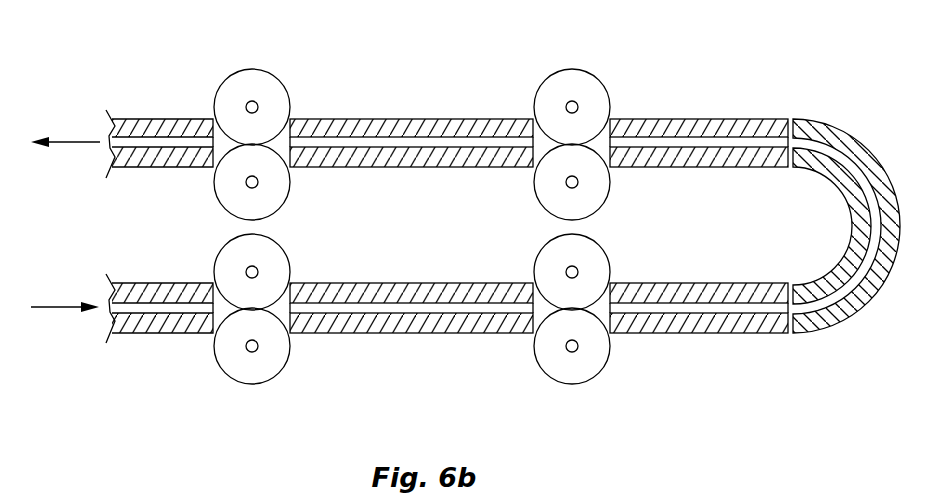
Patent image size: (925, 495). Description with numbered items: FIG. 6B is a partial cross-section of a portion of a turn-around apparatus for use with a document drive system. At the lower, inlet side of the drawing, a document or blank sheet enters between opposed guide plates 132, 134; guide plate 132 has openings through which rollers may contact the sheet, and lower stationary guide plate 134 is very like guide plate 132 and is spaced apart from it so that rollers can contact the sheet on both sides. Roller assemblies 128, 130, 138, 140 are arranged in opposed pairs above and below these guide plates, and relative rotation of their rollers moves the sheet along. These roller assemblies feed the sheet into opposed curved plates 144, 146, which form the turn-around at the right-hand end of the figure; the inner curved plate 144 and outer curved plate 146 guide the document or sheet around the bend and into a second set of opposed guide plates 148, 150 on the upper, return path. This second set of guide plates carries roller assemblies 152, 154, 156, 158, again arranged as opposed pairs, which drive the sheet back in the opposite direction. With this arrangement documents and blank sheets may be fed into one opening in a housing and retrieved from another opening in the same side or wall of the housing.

The roller assembly 128 is at (290, 272).
The roller assembly 130 is at (253, 385).
The guide plate 132 is at (175, 283).
The lower stationary guide plate 134 is at (188, 333).
The roller assembly 138 is at (608, 272).
The roller assembly 140 is at (573, 385).
The curved plate 144 is at (846, 254).
The curved plate 146 is at (829, 122).
The guide plate 148 is at (153, 118).
The guide plate 150 is at (162, 167).
The roller assembly 152 is at (534, 183).
The roller assembly 154 is at (572, 69).
The roller assembly 156 is at (278, 176).
The roller assembly 158 is at (253, 69).